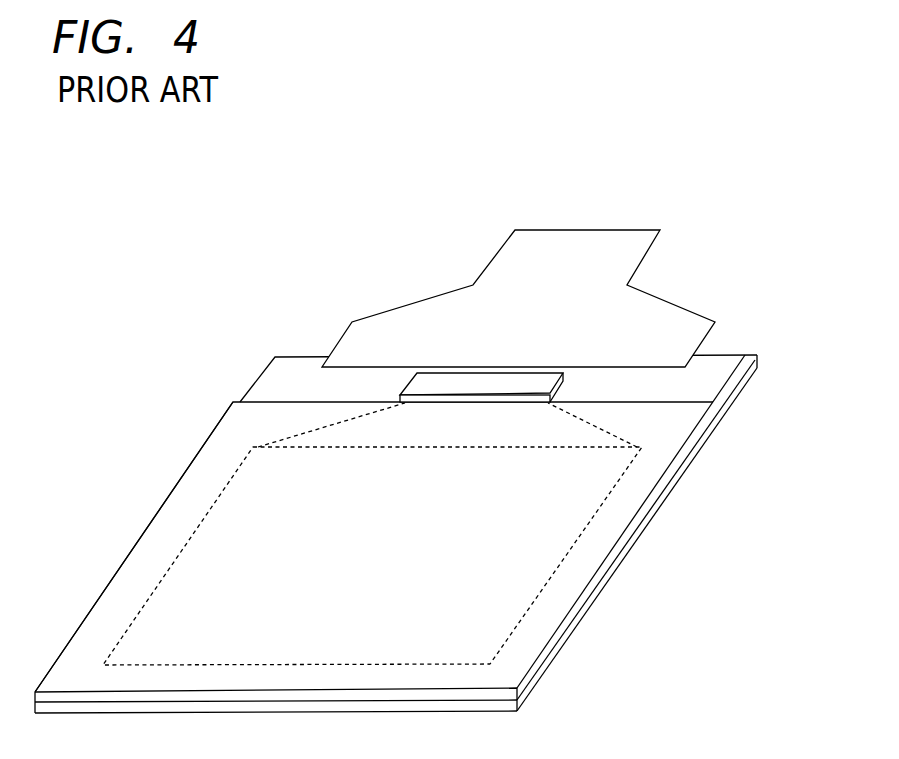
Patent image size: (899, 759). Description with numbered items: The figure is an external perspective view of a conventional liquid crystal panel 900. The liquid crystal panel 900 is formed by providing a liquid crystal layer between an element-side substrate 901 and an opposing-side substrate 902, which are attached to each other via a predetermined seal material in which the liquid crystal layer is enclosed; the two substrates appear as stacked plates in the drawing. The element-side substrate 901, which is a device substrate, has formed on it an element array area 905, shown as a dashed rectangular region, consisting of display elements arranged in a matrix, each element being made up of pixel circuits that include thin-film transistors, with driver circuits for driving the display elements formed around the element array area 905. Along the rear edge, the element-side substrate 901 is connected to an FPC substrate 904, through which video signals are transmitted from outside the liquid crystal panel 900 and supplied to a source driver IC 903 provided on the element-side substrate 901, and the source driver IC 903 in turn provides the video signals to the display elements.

The liquid crystal panel 900 is at (413, 439).
The element-side substrate 901 is at (413, 497).
The opposing-side substrate 902 is at (411, 534).
The source driver IC 903 is at (481, 361).
The FPC substrate 904 is at (518, 266).
The element array area 905 is at (391, 563).